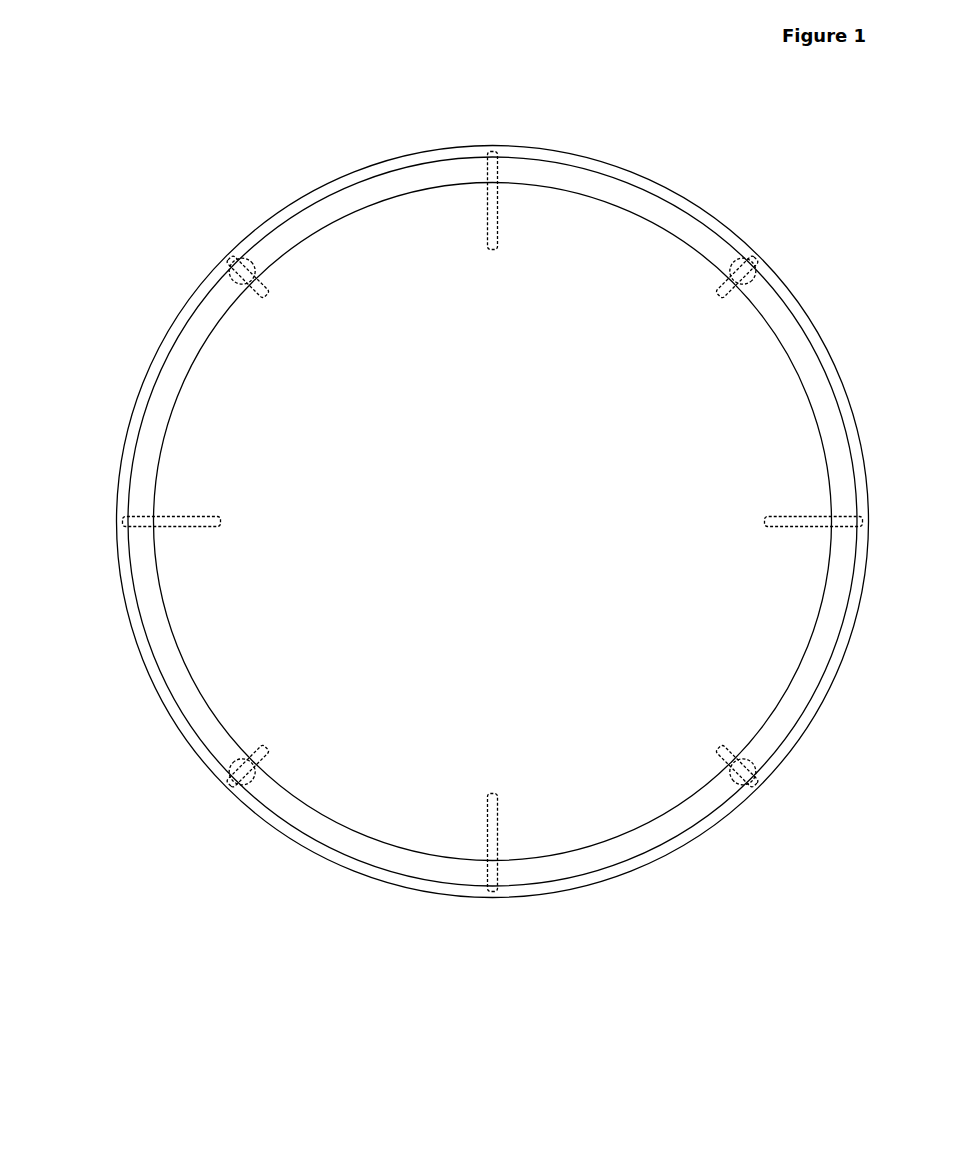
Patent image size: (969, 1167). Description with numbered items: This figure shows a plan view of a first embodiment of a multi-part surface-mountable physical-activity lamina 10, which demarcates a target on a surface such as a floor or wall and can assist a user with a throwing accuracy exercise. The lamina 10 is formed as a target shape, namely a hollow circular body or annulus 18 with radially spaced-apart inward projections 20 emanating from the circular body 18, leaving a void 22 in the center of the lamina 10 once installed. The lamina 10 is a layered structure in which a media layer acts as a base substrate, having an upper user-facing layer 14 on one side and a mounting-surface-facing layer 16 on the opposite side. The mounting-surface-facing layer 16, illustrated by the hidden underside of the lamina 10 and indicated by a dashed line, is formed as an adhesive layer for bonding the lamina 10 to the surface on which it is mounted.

The multi-part surface-mountable physical-activity lamina 10 is at (188, 165).
The user-facing layer 14 is at (155, 612).
The mounting-surface-facing layer 16 is at (167, 620).
The annulus 18 is at (591, 883).
The inward projections 20 is at (492, 250).
The void 22 is at (492, 525).